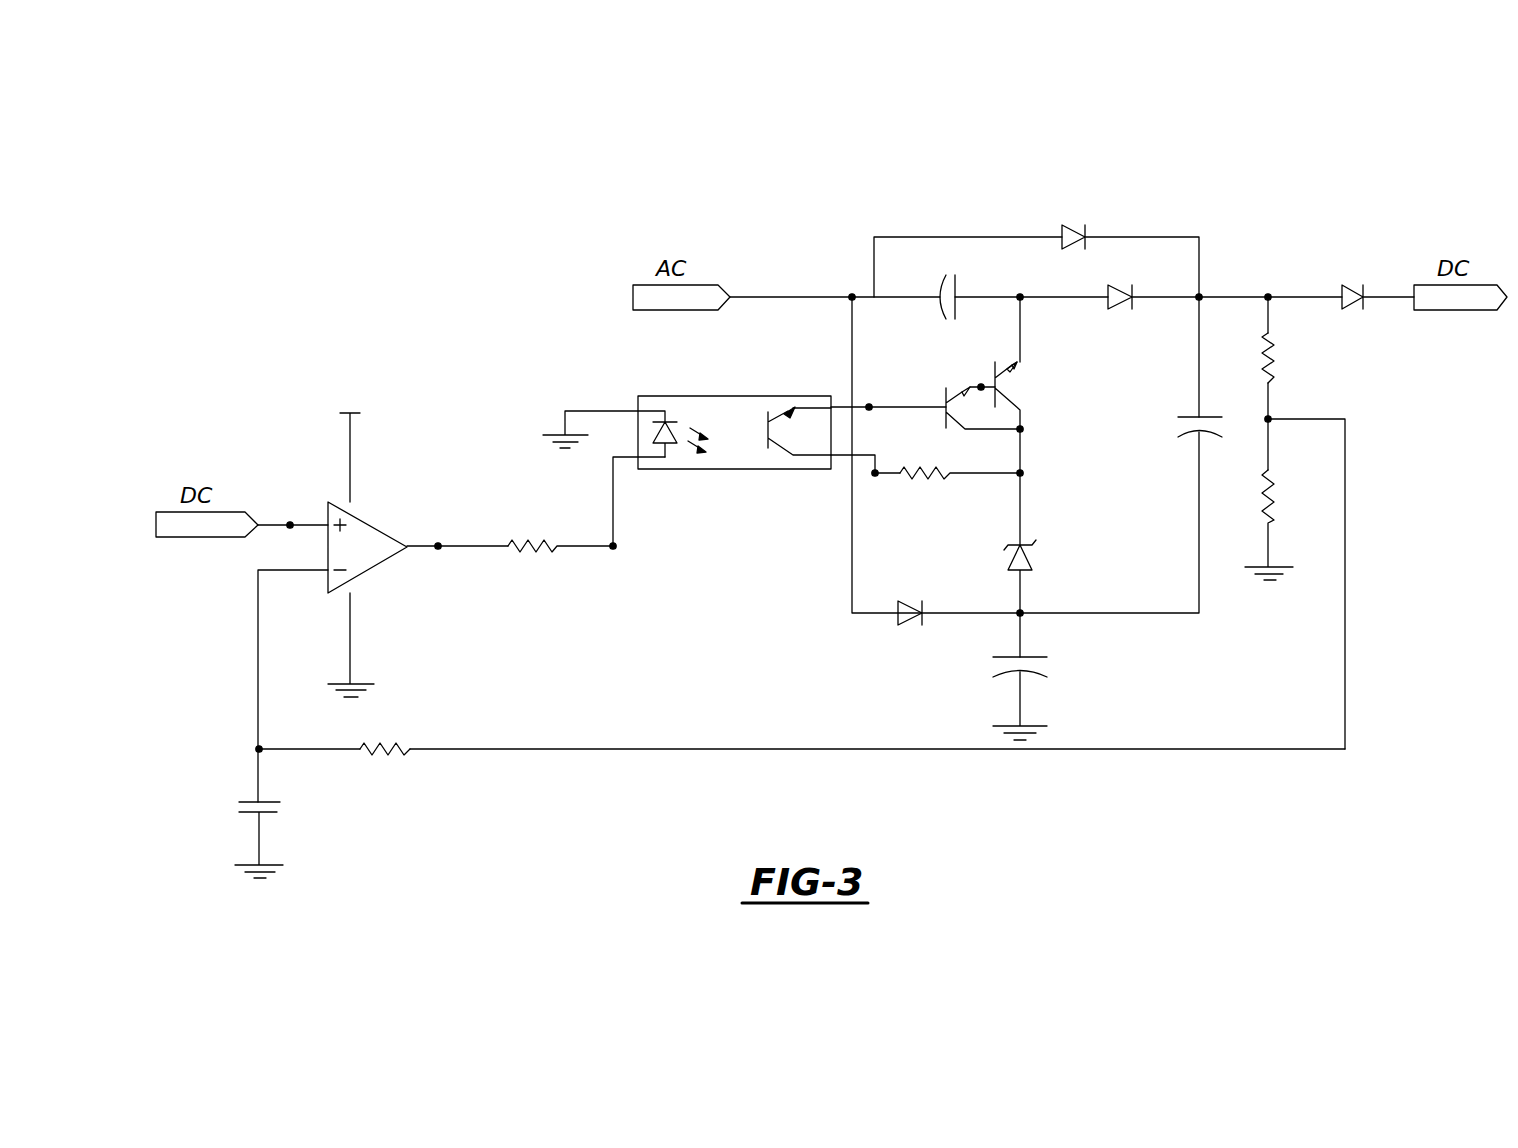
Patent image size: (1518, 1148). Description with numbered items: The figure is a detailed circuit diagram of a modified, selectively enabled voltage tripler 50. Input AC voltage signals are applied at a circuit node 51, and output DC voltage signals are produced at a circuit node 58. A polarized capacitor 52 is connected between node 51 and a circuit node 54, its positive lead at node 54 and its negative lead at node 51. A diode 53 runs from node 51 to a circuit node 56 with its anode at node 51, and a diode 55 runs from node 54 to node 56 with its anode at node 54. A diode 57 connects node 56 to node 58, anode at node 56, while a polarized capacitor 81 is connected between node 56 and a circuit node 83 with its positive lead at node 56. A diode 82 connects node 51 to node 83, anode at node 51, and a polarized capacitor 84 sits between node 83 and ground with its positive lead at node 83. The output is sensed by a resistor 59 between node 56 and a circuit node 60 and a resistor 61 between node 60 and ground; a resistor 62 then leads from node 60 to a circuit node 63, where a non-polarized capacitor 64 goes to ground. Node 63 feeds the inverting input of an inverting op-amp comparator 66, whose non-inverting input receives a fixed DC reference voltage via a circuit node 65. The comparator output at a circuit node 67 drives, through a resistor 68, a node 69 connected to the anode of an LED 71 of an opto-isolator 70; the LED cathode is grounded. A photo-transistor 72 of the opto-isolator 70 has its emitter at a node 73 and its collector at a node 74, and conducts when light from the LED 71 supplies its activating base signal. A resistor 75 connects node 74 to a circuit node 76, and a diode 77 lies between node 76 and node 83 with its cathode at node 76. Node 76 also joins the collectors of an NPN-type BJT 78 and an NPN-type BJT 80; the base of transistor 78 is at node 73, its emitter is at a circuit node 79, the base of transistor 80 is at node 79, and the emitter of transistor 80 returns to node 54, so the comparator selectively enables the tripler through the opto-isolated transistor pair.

The selectively enabled voltage tripler 50 is at (462, 314).
The circuit node 51 is at (842, 281).
The polarized capacitor 52 is at (945, 294).
The diode 53 is at (1086, 236).
The circuit node 54 is at (1036, 328).
The diode 55 is at (1120, 305).
The circuit node 56 is at (1216, 285).
The diode 57 is at (1284, 300).
The circuit node 58 is at (1356, 294).
The resistor 59 is at (1273, 346).
The circuit node 60 is at (1305, 566).
The resistor 61 is at (1276, 491).
The resistor 62 is at (406, 748).
The circuit node 63 is at (238, 750).
The non-polarized capacitor 64 is at (270, 813).
The circuit node 65 is at (293, 512).
The inverting op-amp comparator 66 is at (378, 512).
The circuit node 67 is at (457, 562).
The resistor 68 is at (536, 545).
The node 69 is at (631, 516).
The opto-isolator 70 is at (741, 469).
The LED 71 is at (670, 424).
The photo-transistor 72 is at (765, 433).
The node 73 is at (888, 393).
The node 74 is at (865, 481).
The resistor 75 is at (926, 476).
The circuit node 76 is at (1036, 485).
The diode 77 is at (1034, 558).
The NPN-type BJT 78 is at (945, 406).
The circuit node 79 is at (979, 374).
The NPN-type BJT 80 is at (1021, 396).
The polarized capacitor 81 is at (1193, 432).
The diode 82 is at (905, 616).
The circuit node 83 is at (1036, 624).
The polarized capacitor 84 is at (1031, 672).